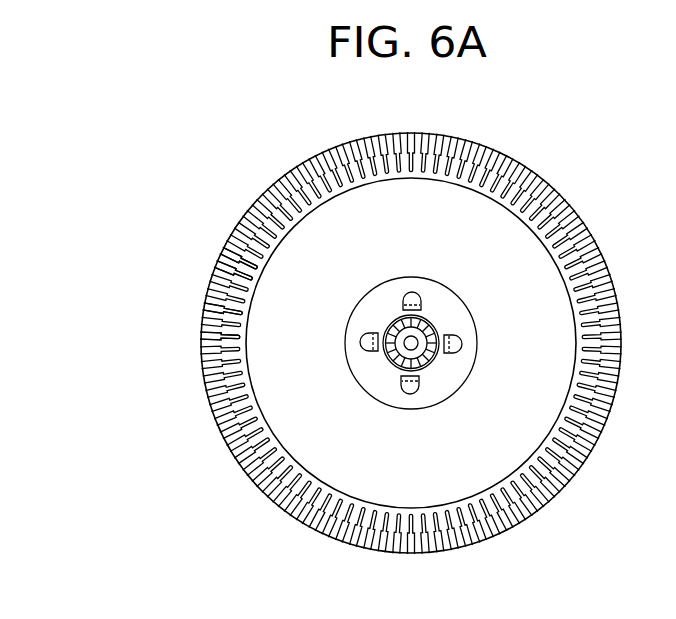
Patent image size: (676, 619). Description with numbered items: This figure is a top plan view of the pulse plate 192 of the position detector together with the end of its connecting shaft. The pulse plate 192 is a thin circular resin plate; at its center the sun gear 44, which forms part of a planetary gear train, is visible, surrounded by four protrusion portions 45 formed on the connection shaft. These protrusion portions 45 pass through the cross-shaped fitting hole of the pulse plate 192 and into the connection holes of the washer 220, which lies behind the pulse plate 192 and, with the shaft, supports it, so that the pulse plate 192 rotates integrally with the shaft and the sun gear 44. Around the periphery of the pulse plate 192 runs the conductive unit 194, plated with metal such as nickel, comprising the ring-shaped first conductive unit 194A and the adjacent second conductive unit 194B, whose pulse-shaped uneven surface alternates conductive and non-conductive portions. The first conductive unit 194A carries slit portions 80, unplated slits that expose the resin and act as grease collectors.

The pulse plate 192 is at (518, 153).
The conductive unit 194 is at (147, 300).
The first conductive unit 194A is at (228, 325).
The second conductive unit 194B is at (200, 351).
The slit portions 80 is at (257, 282).
The washer 220 is at (452, 382).
The sun gear 44 is at (429, 323).
The protrusion portions 45 is at (412, 292).